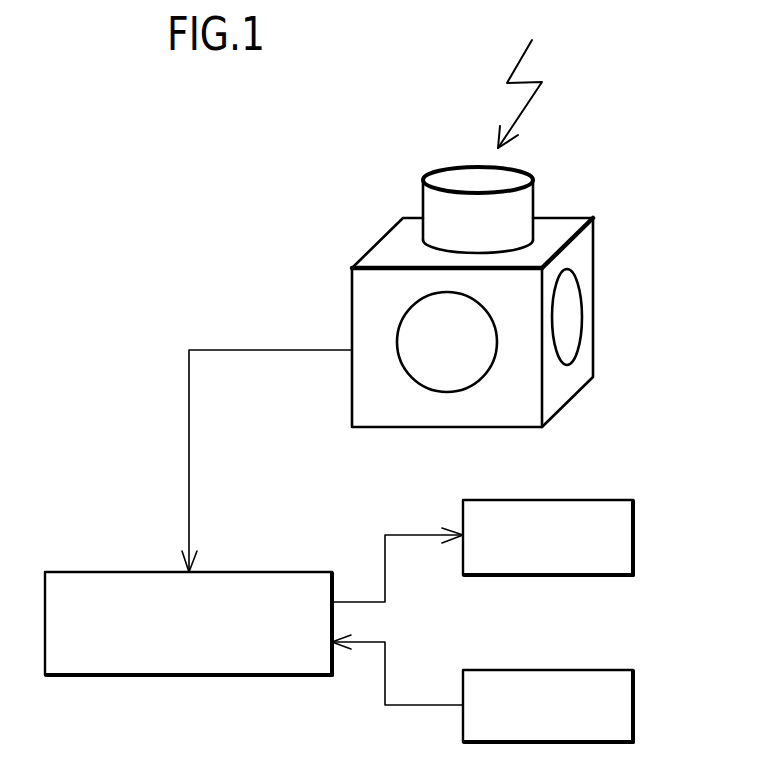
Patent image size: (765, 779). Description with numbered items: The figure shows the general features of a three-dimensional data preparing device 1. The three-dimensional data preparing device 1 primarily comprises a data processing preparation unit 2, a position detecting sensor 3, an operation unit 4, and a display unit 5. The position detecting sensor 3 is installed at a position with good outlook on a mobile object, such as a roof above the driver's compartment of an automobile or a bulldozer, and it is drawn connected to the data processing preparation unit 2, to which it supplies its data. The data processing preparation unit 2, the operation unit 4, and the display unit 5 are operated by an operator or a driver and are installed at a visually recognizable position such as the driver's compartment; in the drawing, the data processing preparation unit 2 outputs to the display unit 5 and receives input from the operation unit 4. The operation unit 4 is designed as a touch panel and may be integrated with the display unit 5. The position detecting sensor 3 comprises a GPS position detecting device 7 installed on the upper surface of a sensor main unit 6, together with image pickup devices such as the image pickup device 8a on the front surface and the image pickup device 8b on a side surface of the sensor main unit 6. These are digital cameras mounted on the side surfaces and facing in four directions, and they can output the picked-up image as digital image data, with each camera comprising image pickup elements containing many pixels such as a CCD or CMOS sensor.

The 3-dimensional data preparing device 1 is at (223, 169).
The data processing preparation unit 2 is at (178, 675).
The position detecting sensor 3 is at (594, 248).
The operation unit 4 is at (633, 706).
The display unit 5 is at (633, 534).
The sensor main unit 6 is at (366, 258).
The GPS position detecting device 7 is at (534, 199).
The image pickup device 8a is at (447, 392).
The image pickup device 8b is at (581, 318).